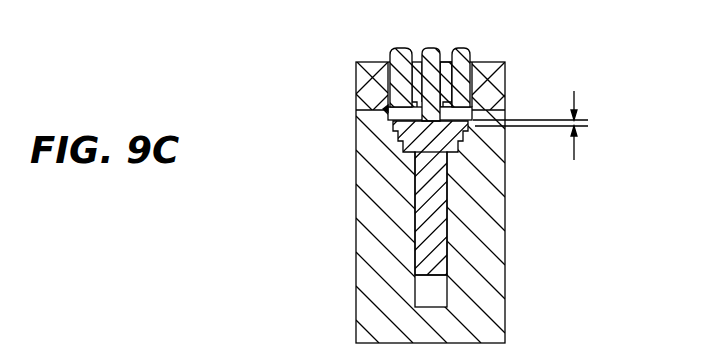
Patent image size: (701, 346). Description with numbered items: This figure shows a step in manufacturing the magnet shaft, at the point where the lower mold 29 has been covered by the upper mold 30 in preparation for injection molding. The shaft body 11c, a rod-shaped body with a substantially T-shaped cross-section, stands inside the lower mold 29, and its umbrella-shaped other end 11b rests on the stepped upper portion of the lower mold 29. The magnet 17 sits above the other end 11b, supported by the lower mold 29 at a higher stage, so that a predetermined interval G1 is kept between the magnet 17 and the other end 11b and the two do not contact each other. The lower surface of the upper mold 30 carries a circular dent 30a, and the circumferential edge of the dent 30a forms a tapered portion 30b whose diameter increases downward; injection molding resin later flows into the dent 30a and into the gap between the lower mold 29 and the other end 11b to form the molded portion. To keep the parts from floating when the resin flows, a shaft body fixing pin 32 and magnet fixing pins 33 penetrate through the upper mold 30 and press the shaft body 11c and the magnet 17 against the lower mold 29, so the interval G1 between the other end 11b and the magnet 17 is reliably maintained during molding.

The lower mold 29 is at (505, 276).
The upper mold 30 is at (356, 89).
The circular dent 30a is at (449, 101).
The tapered portion 30b is at (386, 106).
The magnet 17 is at (472, 108).
The magnet fixing pins 33 is at (392, 52).
The shaft body fixing pin 32 is at (423, 47).
The other end 11b is at (436, 143).
The shaft body 11c is at (440, 224).
The predetermined interval G1 is at (542, 125).